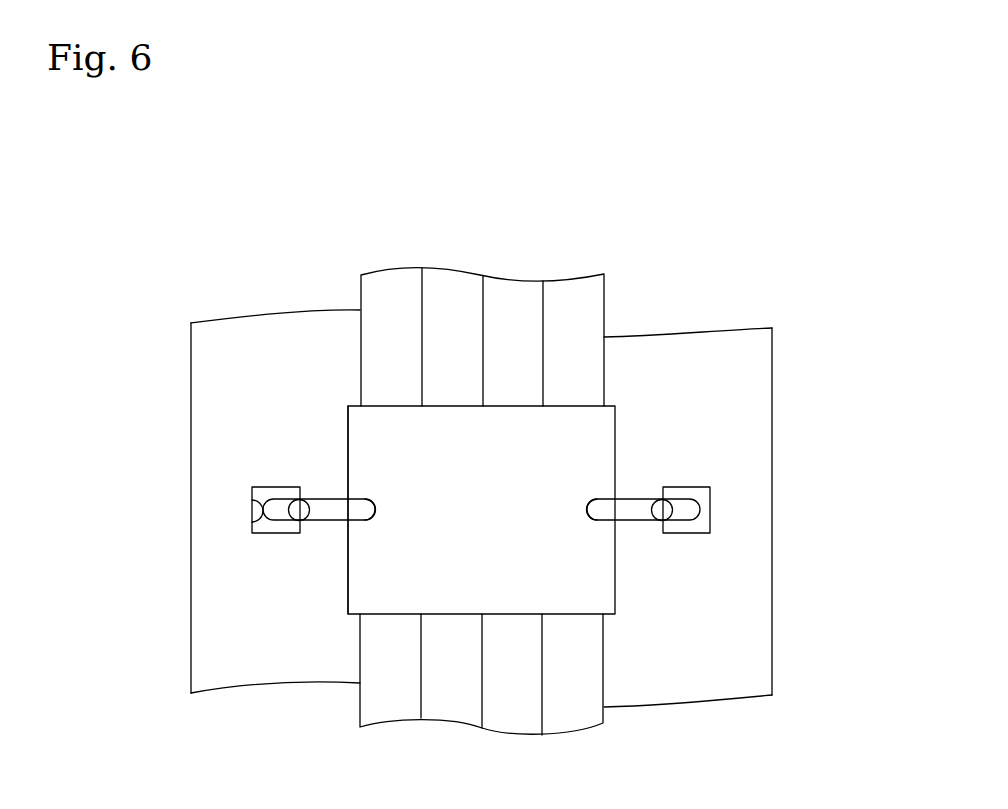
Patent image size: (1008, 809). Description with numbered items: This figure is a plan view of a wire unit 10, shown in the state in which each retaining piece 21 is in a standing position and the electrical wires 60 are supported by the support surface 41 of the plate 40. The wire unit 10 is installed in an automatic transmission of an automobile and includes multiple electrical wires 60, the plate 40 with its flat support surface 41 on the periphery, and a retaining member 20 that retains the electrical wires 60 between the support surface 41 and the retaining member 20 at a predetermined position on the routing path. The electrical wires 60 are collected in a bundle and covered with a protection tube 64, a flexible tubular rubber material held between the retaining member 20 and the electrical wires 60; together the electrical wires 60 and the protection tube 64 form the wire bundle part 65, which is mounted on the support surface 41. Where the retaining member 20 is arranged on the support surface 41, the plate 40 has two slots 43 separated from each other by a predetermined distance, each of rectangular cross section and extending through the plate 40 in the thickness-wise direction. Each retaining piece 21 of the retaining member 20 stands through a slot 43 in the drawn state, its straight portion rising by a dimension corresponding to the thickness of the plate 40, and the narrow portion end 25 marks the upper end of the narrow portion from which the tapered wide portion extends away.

The wire unit 10 is at (497, 133).
The retaining member 20 is at (628, 495).
The retaining piece 21 is at (330, 502).
The narrow portion end 25 is at (372, 512).
The plate 40 is at (773, 355).
The support surface 41 is at (237, 328).
The slot 43 is at (252, 500).
The electrical wire 60 is at (467, 280).
The protection tube 64 is at (607, 433).
The wire bundle part 65 is at (345, 428).